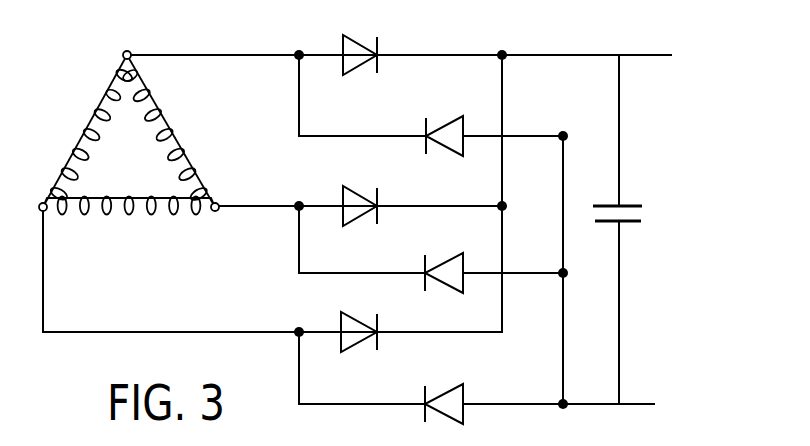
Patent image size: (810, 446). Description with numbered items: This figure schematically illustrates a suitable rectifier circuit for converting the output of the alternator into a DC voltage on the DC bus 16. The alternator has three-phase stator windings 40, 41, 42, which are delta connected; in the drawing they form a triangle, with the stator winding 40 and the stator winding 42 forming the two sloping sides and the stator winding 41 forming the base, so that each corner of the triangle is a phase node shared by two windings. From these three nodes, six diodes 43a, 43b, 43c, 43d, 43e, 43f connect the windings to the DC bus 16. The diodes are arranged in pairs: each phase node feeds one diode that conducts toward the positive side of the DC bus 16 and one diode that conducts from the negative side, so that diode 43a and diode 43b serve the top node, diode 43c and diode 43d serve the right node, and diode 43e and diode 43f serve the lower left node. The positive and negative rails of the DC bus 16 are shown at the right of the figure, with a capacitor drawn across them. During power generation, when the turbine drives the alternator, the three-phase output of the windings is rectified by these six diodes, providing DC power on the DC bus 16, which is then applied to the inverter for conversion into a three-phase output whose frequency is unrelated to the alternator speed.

The stator winding 40 is at (85, 106).
The stator winding 41 is at (136, 209).
The stator winding 42 is at (181, 123).
The diode 43a is at (366, 46).
The diode 43b is at (441, 118).
The diode 43c is at (345, 187).
The diode 43d is at (441, 257).
The diode 43e is at (341, 320).
The diode 43f is at (463, 386).
The DC bus 16 is at (655, 58).